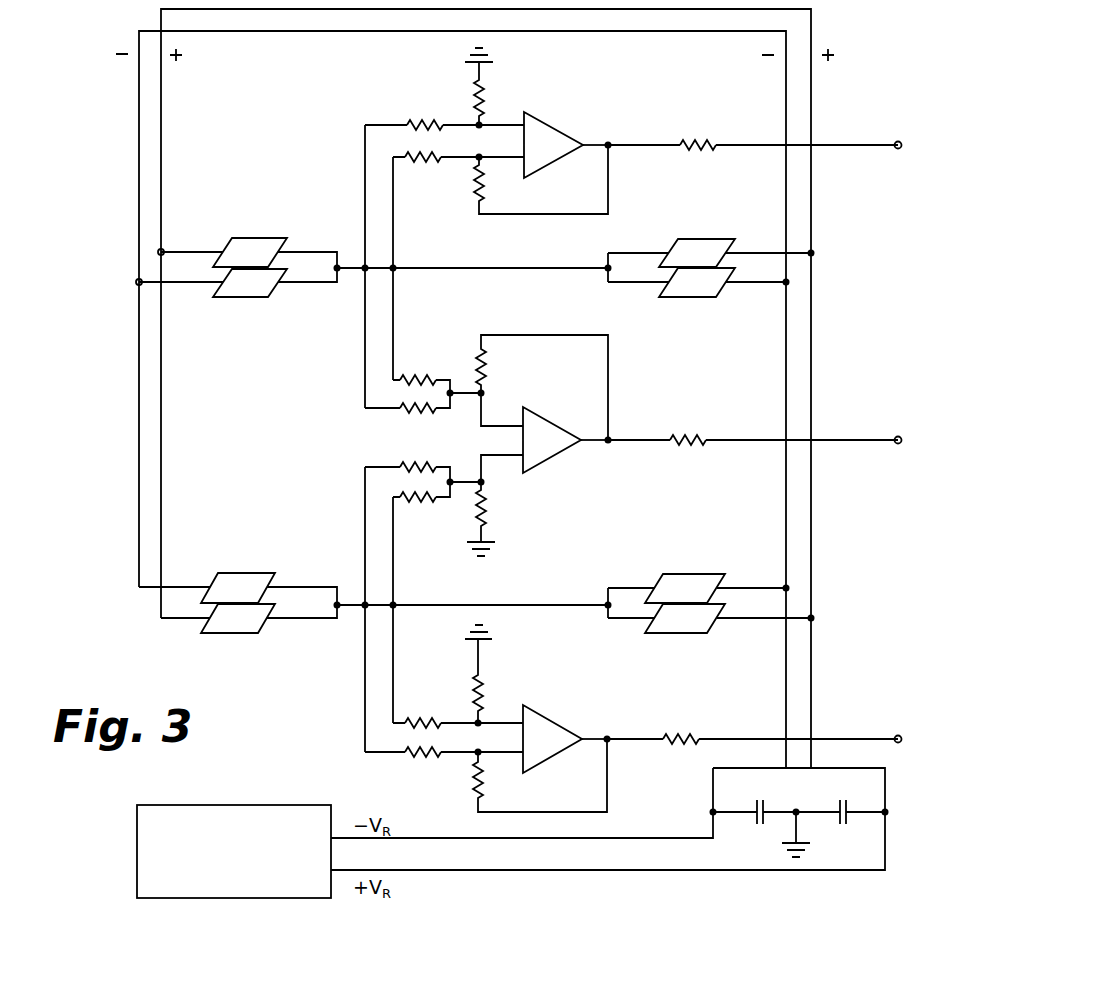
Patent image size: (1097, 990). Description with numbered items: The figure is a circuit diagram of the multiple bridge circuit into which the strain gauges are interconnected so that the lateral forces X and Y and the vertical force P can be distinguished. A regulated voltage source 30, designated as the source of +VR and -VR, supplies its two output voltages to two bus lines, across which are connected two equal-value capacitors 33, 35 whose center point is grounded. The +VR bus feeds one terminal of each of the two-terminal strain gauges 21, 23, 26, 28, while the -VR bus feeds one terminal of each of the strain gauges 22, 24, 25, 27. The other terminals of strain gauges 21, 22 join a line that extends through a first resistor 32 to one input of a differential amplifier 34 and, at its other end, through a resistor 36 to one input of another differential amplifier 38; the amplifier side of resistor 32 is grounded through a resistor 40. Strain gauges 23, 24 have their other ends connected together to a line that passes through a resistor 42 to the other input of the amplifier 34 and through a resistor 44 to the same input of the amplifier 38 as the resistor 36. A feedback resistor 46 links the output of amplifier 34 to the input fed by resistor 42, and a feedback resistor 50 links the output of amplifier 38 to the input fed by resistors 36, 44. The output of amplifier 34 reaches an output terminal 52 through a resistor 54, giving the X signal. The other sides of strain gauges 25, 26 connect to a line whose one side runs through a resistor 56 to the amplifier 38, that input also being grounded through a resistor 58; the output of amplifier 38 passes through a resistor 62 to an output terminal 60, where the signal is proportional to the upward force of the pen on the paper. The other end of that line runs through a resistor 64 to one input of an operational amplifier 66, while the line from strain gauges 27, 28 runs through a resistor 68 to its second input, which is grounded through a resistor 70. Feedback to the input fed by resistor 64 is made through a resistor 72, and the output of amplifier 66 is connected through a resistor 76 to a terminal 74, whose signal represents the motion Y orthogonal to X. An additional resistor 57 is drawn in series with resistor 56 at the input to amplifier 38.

The strain gauge 21 is at (254, 237).
The strain gauge 22 is at (258, 298).
The strain gauge 23 is at (696, 239).
The strain gauge 24 is at (688, 298).
The strain gauge 25 is at (243, 573).
The strain gauge 26 is at (248, 634).
The strain gauge 27 is at (680, 574).
The strain gauge 28 is at (692, 634).
The regulated voltage source 30 is at (278, 805).
The first resistor 32 is at (411, 121).
The capacitor 33 is at (764, 824).
The differential amplifier 34 is at (548, 124).
The capacitor 35 is at (848, 822).
The resistor 36 is at (408, 413).
The differential amplifier 38 is at (538, 420).
The resistor 40 is at (488, 98).
The resistor 42 is at (432, 162).
The resistor 44 is at (418, 376).
The feedback resistor 46 is at (475, 205).
The feedback resistor 50 is at (491, 374).
The output terminal 52 is at (896, 141).
The resistor 54 is at (698, 140).
The resistor 56 is at (420, 466).
The input resistor 57 is at (405, 500).
The resistor 58 is at (492, 527).
The output terminal 60 is at (896, 437).
The resistor 62 is at (690, 435).
The resistor 64 is at (412, 756).
The operational amplifier 66 is at (542, 714).
The resistor 68 is at (432, 718).
The resistor 70 is at (485, 677).
The resistor 72 is at (486, 805).
The terminal 74 is at (894, 737).
The resistor 76 is at (678, 734).